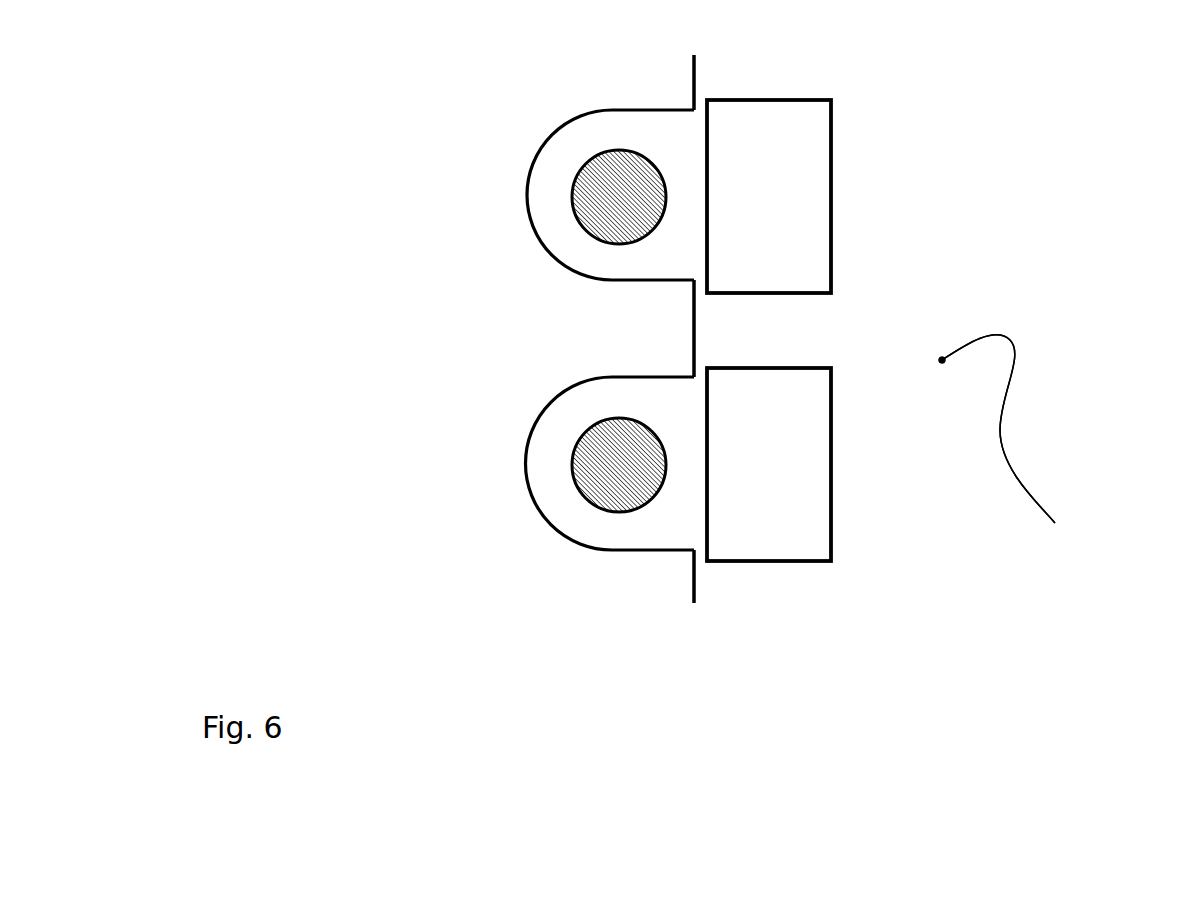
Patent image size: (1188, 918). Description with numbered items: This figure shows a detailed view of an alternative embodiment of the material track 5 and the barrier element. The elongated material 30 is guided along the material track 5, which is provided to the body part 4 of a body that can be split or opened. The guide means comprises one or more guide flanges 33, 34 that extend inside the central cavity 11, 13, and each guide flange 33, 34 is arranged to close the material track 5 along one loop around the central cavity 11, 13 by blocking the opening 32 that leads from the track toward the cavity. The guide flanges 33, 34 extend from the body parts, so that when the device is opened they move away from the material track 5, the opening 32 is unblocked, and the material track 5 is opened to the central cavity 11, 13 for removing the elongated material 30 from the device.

The second body part 4 is at (692, 577).
The material track 5 is at (533, 205).
The elongated material 30 is at (590, 157).
The opening 32 is at (692, 152).
The guide flange 33 is at (790, 223).
The guide flange 34 is at (812, 492).
The central cavity 11 is at (1049, 441).
The central cavity 13 is at (1049, 441).